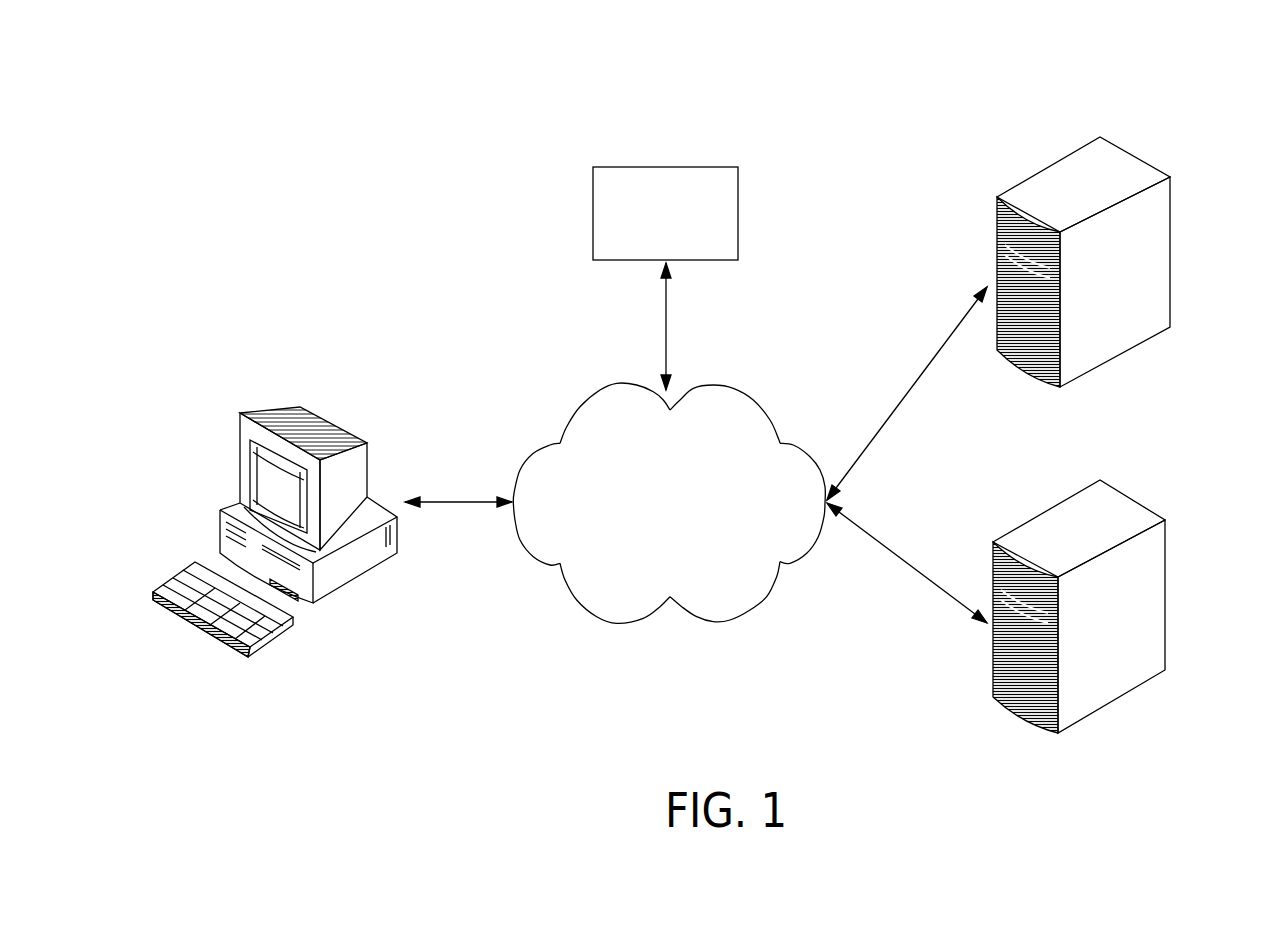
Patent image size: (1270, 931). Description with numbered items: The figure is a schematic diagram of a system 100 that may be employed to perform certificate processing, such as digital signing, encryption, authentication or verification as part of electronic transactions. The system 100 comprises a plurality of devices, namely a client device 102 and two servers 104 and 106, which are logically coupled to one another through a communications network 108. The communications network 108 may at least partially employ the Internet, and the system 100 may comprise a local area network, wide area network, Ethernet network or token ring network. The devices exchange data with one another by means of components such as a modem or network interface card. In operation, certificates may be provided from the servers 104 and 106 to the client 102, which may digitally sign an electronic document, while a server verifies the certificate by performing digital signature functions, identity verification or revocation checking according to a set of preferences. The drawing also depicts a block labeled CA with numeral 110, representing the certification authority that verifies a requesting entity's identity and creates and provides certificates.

The system 100 is at (323, 120).
The device 102 is at (398, 542).
The server 104 is at (1120, 262).
The server 106 is at (1117, 606).
The communications network 108 is at (750, 610).
The certificate authority 110 is at (738, 247).